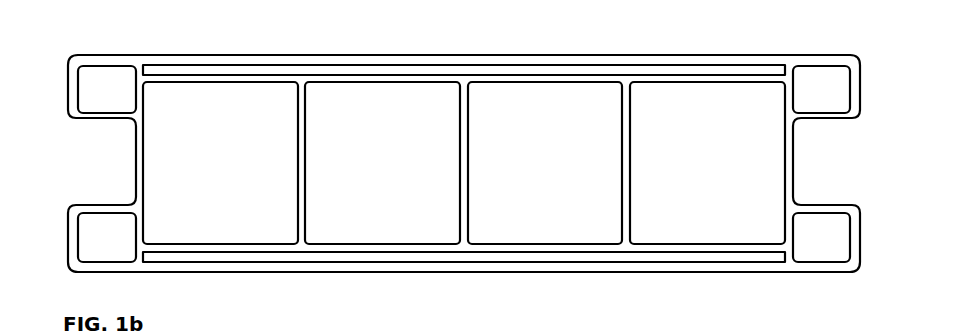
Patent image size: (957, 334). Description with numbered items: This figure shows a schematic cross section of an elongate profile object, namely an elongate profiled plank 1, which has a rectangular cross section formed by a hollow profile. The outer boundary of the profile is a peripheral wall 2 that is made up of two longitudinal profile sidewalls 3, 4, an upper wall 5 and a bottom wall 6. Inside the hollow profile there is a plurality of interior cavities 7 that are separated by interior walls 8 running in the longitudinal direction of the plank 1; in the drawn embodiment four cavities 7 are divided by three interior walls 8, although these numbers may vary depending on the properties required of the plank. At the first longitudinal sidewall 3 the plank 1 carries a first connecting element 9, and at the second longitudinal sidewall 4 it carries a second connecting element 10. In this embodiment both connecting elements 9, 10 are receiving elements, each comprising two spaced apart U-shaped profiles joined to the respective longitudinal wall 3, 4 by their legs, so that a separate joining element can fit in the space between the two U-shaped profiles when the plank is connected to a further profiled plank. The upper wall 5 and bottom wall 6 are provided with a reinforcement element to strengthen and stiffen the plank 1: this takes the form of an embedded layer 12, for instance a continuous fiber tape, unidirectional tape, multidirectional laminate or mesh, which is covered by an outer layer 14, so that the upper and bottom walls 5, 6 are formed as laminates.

The elongate profiled plank 1 is at (797, 291).
The peripheral wall 2 is at (792, 63).
The first longitudinal profile sidewall 3 is at (135, 165).
The second longitudinal profile sidewall 4 is at (793, 164).
The upper wall 5 is at (158, 55).
The bottom wall 6 is at (372, 273).
The interior cavity 7 is at (226, 176).
The interior wall 8 is at (300, 147).
The first connecting element 9 is at (67, 100).
The second connecting element 10 is at (862, 98).
The embedded layer 12 is at (430, 73).
The outer layer 14 is at (531, 67).